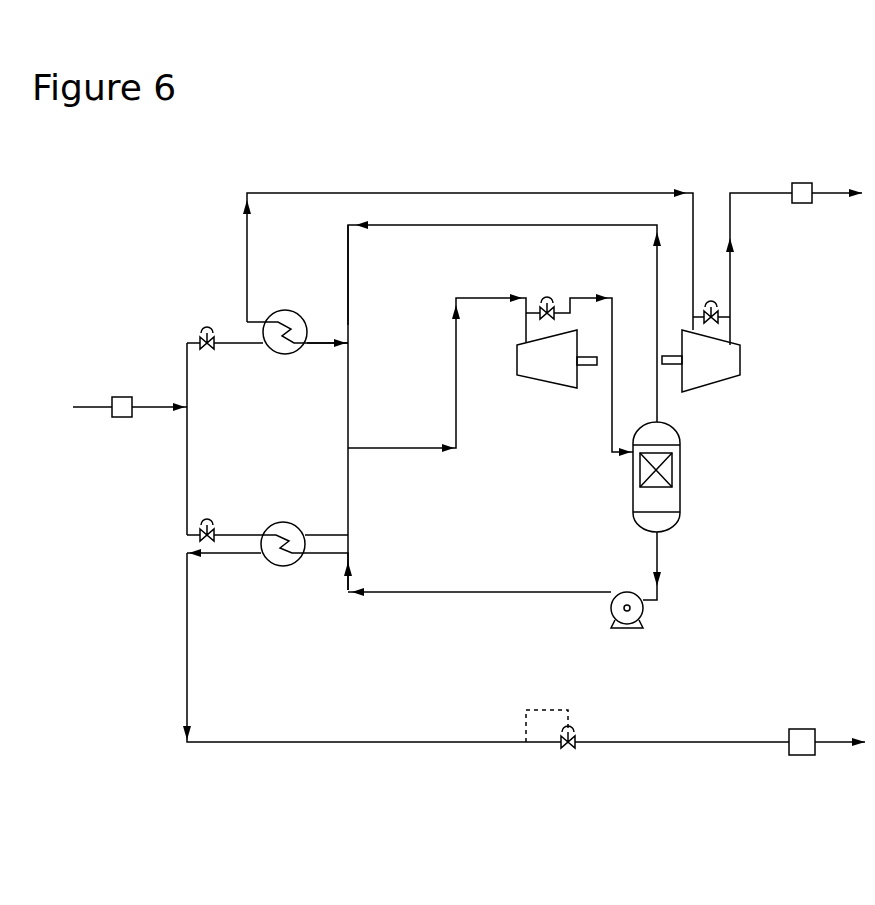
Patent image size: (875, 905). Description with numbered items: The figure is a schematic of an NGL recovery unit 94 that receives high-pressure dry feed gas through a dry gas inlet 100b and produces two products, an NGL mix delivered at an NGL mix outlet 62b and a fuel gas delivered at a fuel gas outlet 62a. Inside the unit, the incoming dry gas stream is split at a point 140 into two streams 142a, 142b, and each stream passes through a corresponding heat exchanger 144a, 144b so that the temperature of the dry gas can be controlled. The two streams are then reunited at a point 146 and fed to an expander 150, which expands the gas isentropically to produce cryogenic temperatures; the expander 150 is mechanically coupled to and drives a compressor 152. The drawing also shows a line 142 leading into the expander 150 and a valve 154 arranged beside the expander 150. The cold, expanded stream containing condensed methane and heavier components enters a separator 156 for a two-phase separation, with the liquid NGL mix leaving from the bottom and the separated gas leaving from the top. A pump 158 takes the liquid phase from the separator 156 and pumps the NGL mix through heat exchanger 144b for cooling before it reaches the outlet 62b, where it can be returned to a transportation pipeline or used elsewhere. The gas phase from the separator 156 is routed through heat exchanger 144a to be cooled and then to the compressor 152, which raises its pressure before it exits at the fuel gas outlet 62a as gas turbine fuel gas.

The NGL unit 94 is at (570, 152).
The heat exchanger 144a is at (283, 311).
The heat exchanger 144b is at (273, 566).
The split point 140 is at (189, 404).
The first dry gas stream 142a is at (189, 378).
The second dry gas stream 142b is at (189, 440).
The dry gas inlet 100b is at (121, 419).
The reuniting point 146 is at (350, 445).
The compressor inlet line 142 is at (522, 330).
The bypass valve 154 is at (571, 303).
The expander 150 is at (545, 376).
The compressor 152 is at (715, 380).
The separator 156 is at (682, 480).
The pump 158 is at (640, 616).
The fuel gas outlet 62a is at (803, 205).
The NGL mix outlet 62b is at (794, 759).